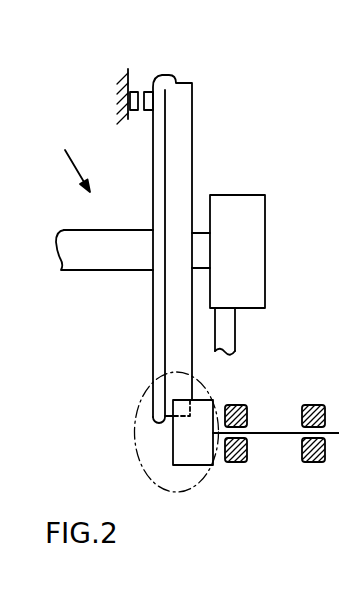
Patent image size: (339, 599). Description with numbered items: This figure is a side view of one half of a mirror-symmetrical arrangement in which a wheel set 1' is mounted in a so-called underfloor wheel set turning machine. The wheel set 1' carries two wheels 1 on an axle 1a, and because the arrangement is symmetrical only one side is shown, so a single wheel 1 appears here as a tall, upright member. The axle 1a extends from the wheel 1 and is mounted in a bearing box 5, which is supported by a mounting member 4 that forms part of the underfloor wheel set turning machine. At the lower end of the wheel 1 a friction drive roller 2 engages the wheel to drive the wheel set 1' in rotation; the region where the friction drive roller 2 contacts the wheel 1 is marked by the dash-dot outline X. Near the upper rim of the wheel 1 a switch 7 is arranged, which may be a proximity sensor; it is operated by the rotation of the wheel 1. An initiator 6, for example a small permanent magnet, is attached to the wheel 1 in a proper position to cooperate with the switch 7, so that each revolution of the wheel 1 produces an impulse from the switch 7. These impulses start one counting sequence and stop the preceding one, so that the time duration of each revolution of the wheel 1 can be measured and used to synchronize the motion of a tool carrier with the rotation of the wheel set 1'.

The wheel 1 is at (149, 249).
The wheel set 1' is at (74, 159).
The axle 1a is at (89, 252).
The friction drive roller 2 is at (188, 450).
The mounting member 4 is at (226, 323).
The bearing box 5 is at (265, 298).
The initiator 6 is at (147, 90).
The switch 7 is at (133, 90).
The detail region X is at (207, 472).